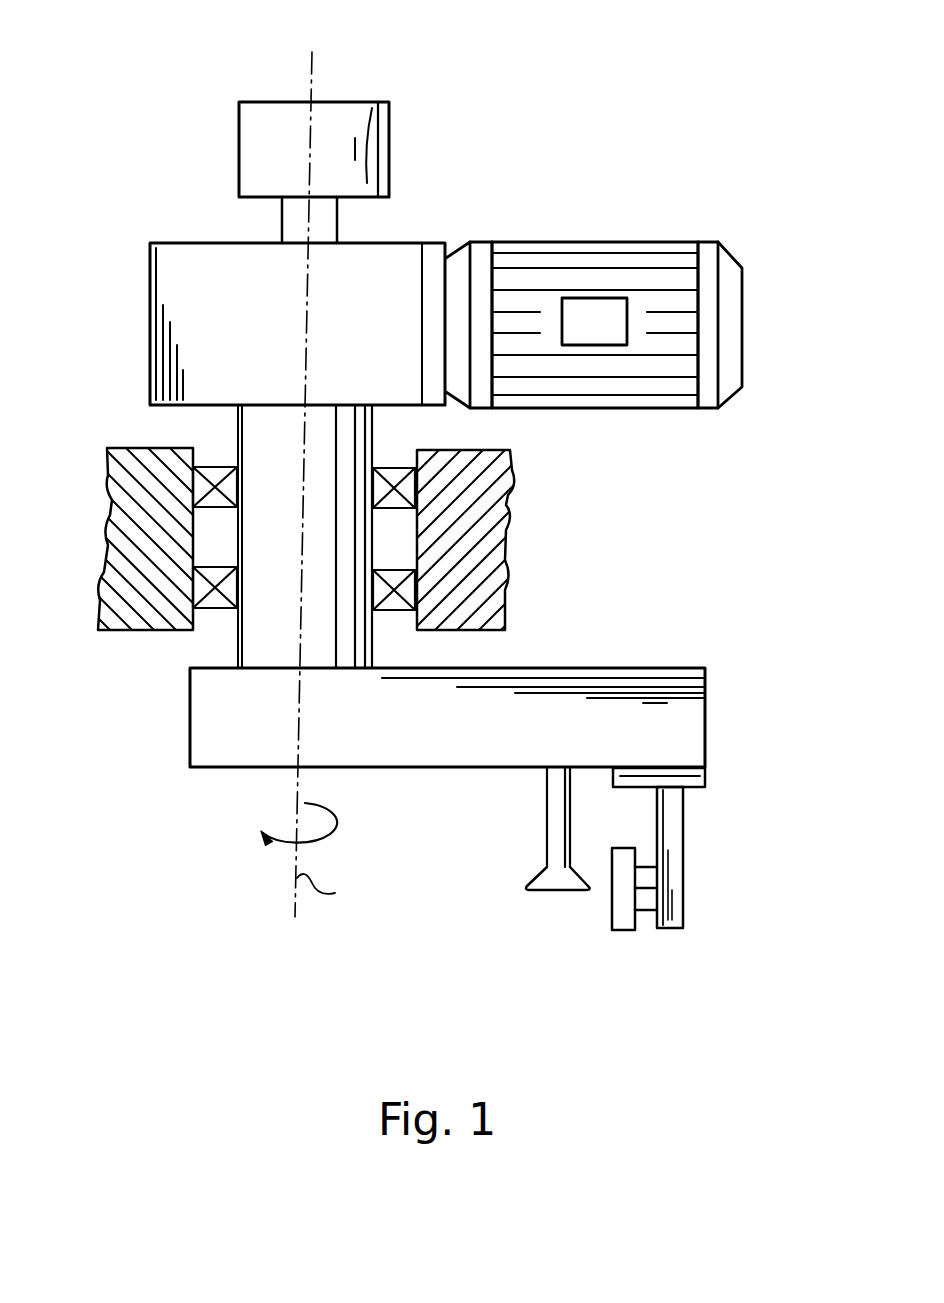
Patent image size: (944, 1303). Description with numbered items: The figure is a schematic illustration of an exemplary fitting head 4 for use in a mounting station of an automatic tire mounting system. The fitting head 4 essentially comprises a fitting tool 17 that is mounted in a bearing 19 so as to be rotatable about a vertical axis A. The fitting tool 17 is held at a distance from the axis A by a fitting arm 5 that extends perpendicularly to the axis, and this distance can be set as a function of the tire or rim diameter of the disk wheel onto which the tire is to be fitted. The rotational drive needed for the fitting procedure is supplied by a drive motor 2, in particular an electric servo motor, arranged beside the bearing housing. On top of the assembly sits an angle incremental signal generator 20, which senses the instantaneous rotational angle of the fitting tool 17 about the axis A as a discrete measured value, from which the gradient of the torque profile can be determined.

The drive motor 2 is at (665, 255).
The fitting head 4 is at (160, 860).
The fitting arm 5 is at (602, 707).
The fitting tool 17 is at (682, 885).
The bearing 19 is at (215, 610).
The angle incremental signal generator 20 is at (370, 116).